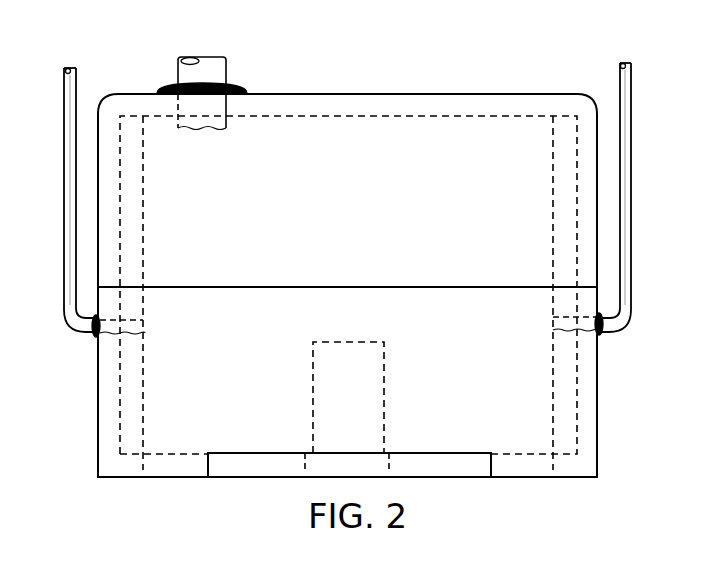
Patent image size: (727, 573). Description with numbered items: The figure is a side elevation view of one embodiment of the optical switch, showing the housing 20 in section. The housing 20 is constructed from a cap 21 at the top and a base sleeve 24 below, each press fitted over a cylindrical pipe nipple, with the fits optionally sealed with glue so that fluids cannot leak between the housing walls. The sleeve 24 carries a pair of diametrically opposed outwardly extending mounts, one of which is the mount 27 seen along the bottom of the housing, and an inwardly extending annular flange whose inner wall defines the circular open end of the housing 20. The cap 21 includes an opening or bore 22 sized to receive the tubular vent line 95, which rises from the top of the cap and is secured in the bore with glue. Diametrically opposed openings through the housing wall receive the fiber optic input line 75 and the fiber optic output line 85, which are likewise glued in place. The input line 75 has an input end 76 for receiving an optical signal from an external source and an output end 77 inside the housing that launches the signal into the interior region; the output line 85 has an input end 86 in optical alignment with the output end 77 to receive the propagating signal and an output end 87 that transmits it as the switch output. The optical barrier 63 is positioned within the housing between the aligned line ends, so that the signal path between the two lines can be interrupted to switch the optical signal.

The housing 20 is at (452, 87).
The cap 21 is at (268, 100).
The opening or bore 22 is at (553, 460).
The base sleeve 24 is at (108, 408).
The mount 27 is at (252, 478).
The optical barrier 63 is at (313, 384).
The fiber optic input line 75 is at (64, 184).
The input end 76 is at (68, 68).
The output end 77 is at (145, 321).
The fiber optic output line 85 is at (628, 180).
The input end 86 is at (551, 317).
The output end 87 is at (624, 63).
The vent line 95 is at (183, 72).